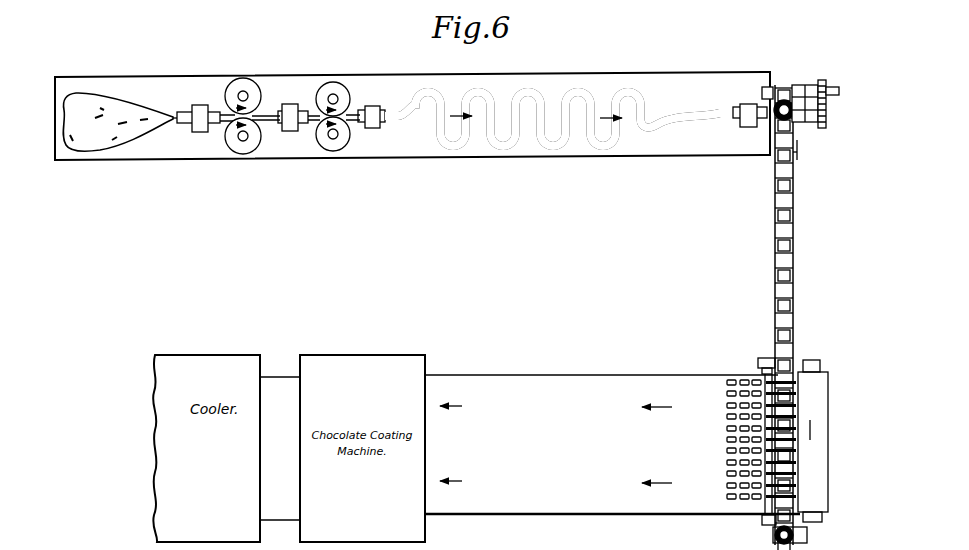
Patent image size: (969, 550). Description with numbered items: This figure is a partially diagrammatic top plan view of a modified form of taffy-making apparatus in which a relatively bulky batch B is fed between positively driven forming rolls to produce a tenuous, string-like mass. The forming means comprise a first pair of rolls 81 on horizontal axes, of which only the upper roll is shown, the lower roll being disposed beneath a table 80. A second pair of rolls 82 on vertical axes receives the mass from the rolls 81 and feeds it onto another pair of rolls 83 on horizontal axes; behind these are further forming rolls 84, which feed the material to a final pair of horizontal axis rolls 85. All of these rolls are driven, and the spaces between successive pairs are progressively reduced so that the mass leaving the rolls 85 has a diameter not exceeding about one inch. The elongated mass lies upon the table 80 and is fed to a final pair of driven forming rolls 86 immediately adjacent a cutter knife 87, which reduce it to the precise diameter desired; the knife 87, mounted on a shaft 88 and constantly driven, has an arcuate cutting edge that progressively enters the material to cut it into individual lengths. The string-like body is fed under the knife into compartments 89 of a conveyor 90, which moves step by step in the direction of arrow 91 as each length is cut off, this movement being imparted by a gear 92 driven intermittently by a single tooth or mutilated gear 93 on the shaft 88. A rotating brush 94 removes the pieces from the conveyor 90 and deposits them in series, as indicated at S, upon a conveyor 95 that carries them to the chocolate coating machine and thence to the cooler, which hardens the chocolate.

The batch B is at (98, 110).
The table 80 is at (193, 83).
The first pair of rolls 81 is at (208, 120).
The second pair of rolls 82 is at (257, 88).
The pair of rolls 83 is at (288, 132).
The forming rolls 84 is at (337, 87).
The final pair of horizontal axis rolls 85 is at (372, 130).
The driven forming rolls 86 is at (737, 122).
The cutter knife 87 is at (764, 100).
The shaft 88 is at (833, 88).
The compartments 89 is at (790, 151).
The conveyor 90 is at (788, 226).
The arrow 91 is at (798, 161).
The gear 92 is at (820, 110).
The single tooth or mutilated gear 93 is at (815, 86).
The rotating brush 94 is at (766, 505).
The conveyor 95 is at (612, 444).
The series S is at (738, 376).